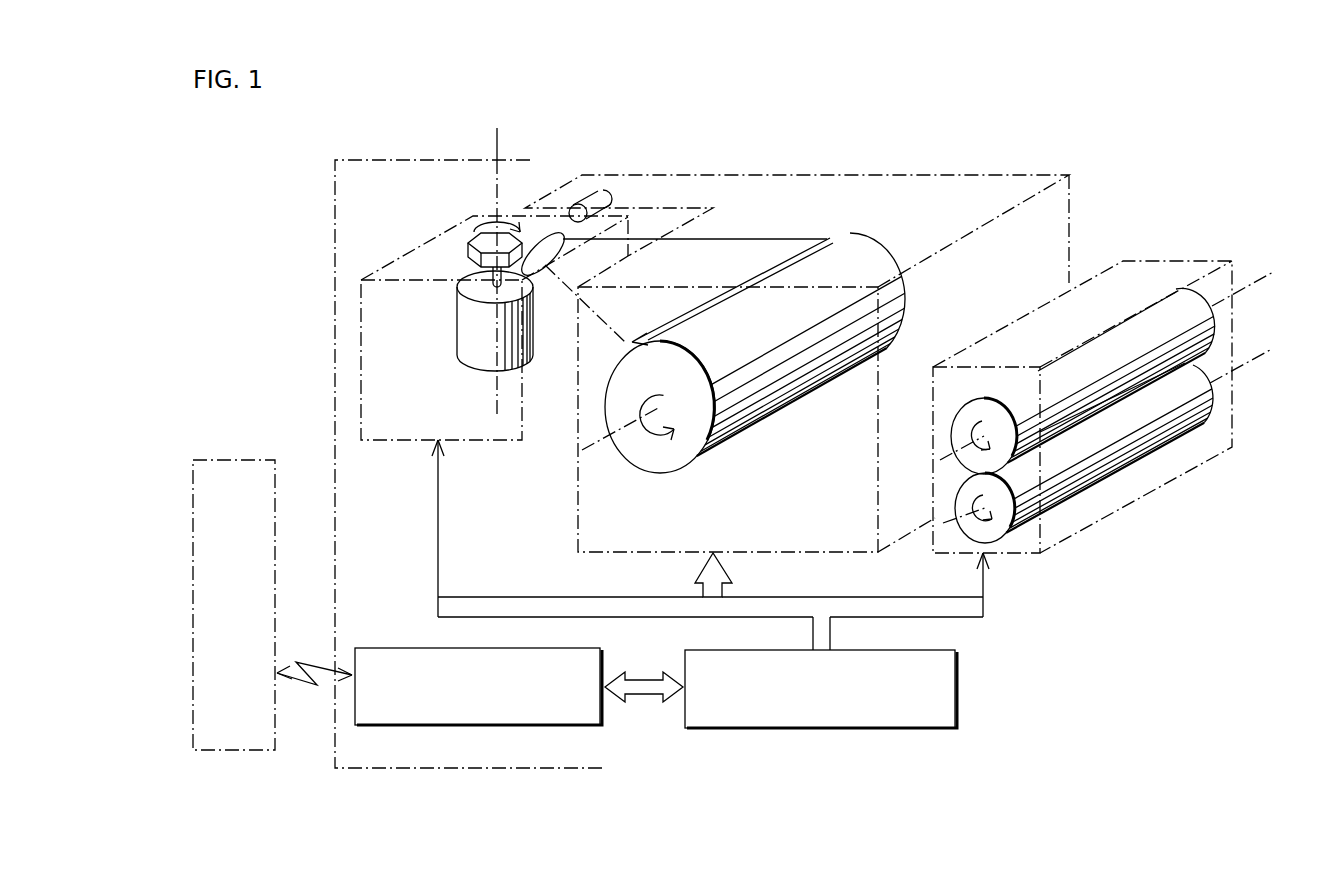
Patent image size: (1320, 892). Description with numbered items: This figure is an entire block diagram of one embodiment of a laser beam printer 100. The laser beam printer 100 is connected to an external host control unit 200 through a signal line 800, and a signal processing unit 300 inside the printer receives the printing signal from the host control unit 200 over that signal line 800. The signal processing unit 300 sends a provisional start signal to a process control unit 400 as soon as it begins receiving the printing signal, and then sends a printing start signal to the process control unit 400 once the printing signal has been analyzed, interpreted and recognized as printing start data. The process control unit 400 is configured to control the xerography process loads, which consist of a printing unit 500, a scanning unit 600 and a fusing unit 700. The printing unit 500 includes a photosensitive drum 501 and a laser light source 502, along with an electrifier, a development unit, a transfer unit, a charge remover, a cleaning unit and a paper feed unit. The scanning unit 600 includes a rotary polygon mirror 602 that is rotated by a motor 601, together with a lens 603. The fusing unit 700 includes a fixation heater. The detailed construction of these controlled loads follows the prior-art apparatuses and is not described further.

The laser beam printer 100 is at (385, 160).
The host control unit 200 is at (232, 460).
The signal processing unit 300 is at (383, 647).
The process control unit 400 is at (957, 688).
The printing unit 500 is at (893, 175).
The photosensitive drum 501 is at (863, 238).
The laser light source 502 is at (608, 198).
The scanning unit 600 is at (415, 246).
The motor 601 is at (457, 346).
The rotary polygon mirror 602 is at (470, 268).
The lens 603 is at (562, 249).
The fusing unit 700 is at (1177, 261).
The signal line 800 is at (303, 698).